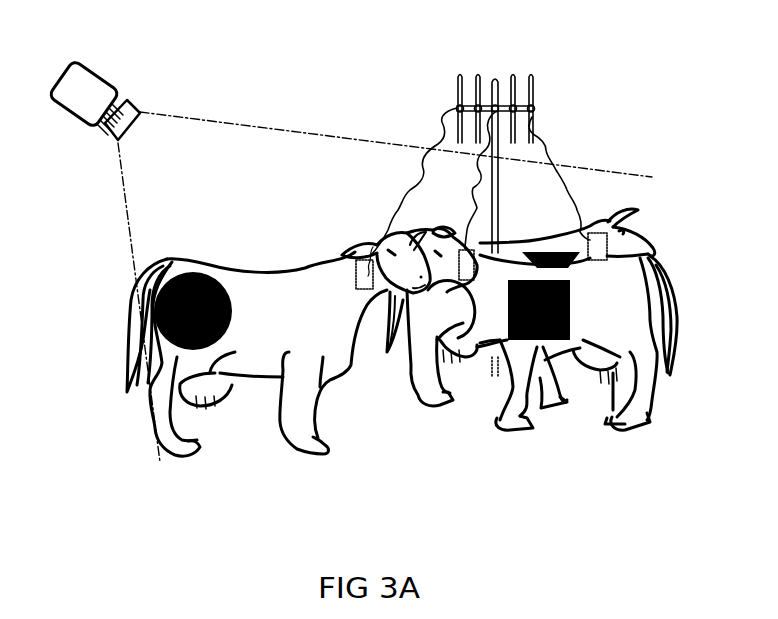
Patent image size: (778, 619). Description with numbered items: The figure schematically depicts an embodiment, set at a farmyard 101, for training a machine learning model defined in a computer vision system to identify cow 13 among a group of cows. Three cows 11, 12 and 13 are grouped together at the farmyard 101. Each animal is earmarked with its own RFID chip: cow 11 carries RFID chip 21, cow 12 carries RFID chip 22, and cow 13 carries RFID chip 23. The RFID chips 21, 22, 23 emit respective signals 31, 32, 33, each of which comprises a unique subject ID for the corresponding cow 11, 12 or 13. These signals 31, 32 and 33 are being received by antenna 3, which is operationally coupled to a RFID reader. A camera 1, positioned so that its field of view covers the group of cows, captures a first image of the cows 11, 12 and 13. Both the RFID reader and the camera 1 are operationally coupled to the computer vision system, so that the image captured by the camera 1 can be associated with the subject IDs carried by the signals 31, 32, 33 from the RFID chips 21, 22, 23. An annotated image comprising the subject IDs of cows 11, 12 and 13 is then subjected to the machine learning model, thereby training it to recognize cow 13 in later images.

The camera 1 is at (95, 73).
The farmyard 101 is at (385, 260).
The antenna 3 is at (498, 80).
The signal 31 is at (556, 178).
The signal 32 is at (480, 157).
The signal 33 is at (424, 160).
The RFID chip 21 is at (587, 238).
The RFID chip 22 is at (460, 247).
The RFID chip 23 is at (356, 246).
The cow 11 is at (635, 231).
The cow 12 is at (660, 380).
The cow 13 is at (190, 260).